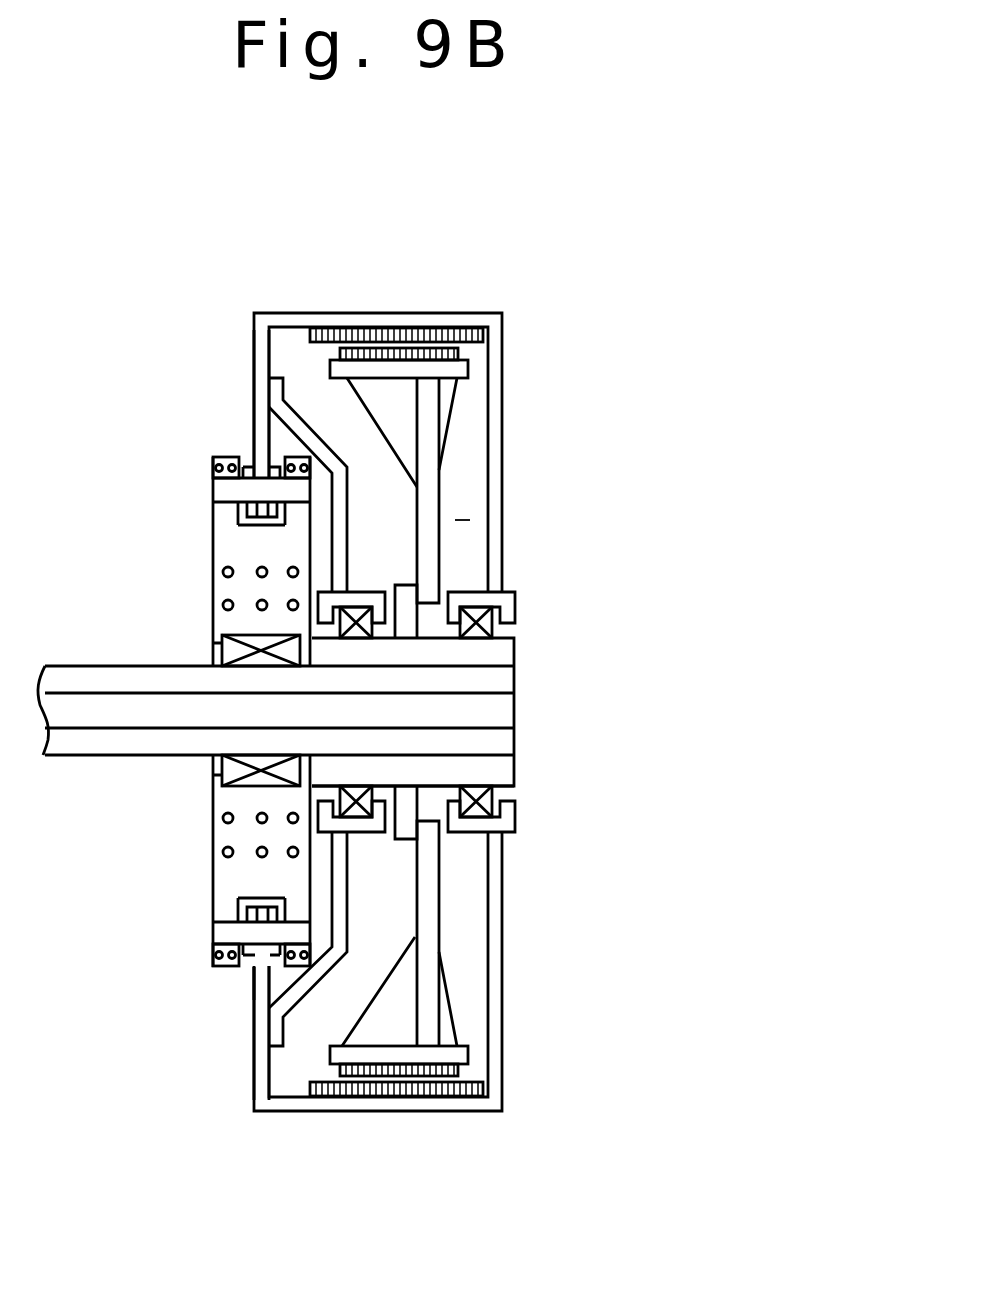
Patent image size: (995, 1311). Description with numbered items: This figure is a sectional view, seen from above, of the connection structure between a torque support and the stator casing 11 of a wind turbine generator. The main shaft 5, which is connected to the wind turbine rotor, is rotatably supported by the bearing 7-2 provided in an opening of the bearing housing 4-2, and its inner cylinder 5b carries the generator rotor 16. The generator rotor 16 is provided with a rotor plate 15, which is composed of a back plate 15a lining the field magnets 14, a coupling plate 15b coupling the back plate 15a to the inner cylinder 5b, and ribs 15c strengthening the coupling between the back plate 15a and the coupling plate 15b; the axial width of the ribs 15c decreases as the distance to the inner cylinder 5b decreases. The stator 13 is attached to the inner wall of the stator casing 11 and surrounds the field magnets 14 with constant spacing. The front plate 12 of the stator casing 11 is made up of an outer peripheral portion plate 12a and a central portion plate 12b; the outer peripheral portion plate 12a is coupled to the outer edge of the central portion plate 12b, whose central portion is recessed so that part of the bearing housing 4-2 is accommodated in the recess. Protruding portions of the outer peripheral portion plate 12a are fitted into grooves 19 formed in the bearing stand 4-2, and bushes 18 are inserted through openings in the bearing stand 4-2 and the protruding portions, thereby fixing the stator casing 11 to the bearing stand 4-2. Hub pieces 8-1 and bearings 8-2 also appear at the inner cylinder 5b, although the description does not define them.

The stator casing 11 is at (340, 313).
The front plate 12 is at (197, 707).
The outer peripheral portion plate 12a is at (254, 367).
The central portion plate 12b is at (293, 435).
The stator 13 is at (440, 328).
The field magnets 14 is at (468, 355).
The rotor plate 15 is at (491, 712).
The back plate 15a is at (470, 370).
The coupling plate 15b is at (427, 505).
The ribs 15c is at (447, 403).
The generator rotor 16 is at (452, 520).
The hub 8-1 is at (357, 638).
The bearing 8-2 is at (500, 632).
The main shaft 5 is at (595, 735).
The inner cylinder 5b is at (507, 770).
The bearing 7-2 is at (223, 780).
The bearing housing (bearing stand) 4-2 is at (223, 888).
The bushes 18 is at (223, 932).
The grooves 19 is at (245, 968).